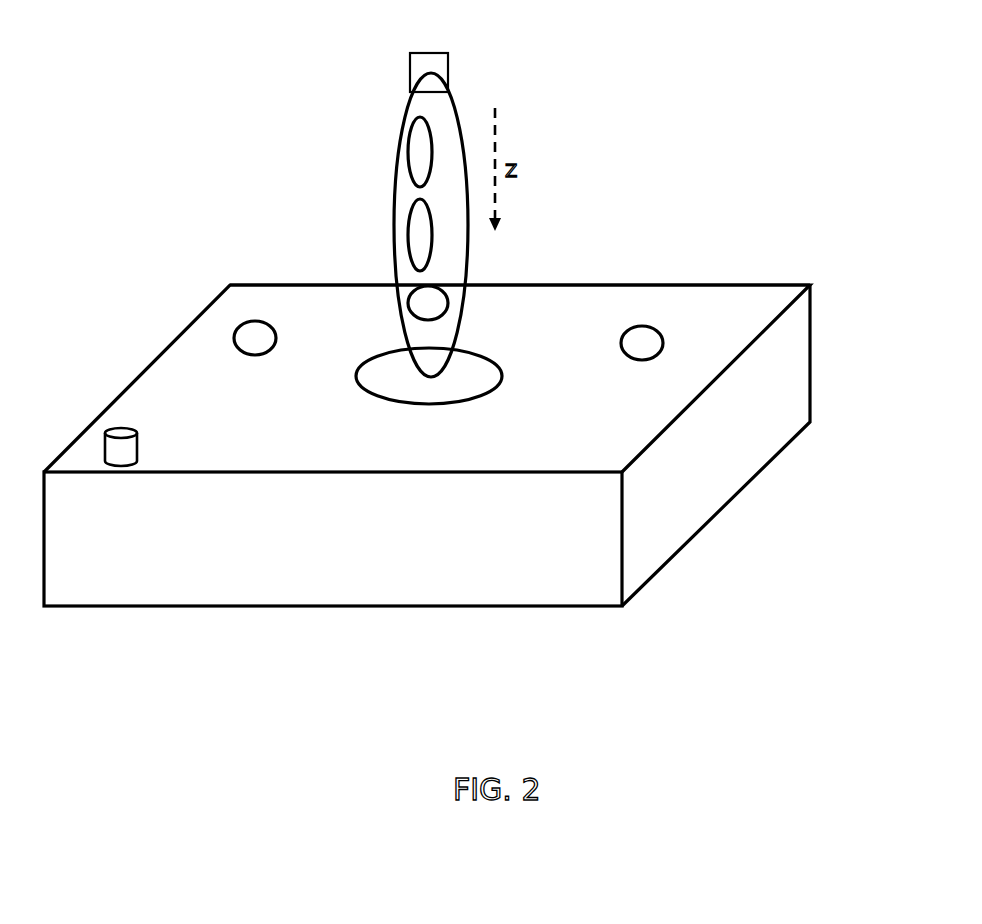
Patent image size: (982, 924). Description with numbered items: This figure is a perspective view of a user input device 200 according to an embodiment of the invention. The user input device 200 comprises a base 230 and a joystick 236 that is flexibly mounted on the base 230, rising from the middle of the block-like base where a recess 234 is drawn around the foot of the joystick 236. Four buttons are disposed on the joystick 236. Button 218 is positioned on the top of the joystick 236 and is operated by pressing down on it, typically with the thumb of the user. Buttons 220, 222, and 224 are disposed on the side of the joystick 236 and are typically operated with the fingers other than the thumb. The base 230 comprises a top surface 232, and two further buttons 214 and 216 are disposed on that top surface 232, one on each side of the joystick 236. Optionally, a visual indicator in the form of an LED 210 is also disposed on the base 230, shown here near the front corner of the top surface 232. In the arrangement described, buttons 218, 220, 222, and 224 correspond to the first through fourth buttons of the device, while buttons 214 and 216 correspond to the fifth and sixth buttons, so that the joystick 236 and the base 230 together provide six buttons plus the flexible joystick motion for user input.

The user input device 200 is at (706, 175).
The LED 210 is at (128, 450).
The button 214 is at (250, 333).
The button 216 is at (643, 337).
The button 218 is at (435, 62).
The button 220 is at (420, 150).
The button 222 is at (420, 236).
The button 224 is at (425, 302).
The base 230 is at (497, 562).
The top surface 232 is at (180, 389).
The recess 234 is at (473, 372).
The joystick 236 is at (437, 108).